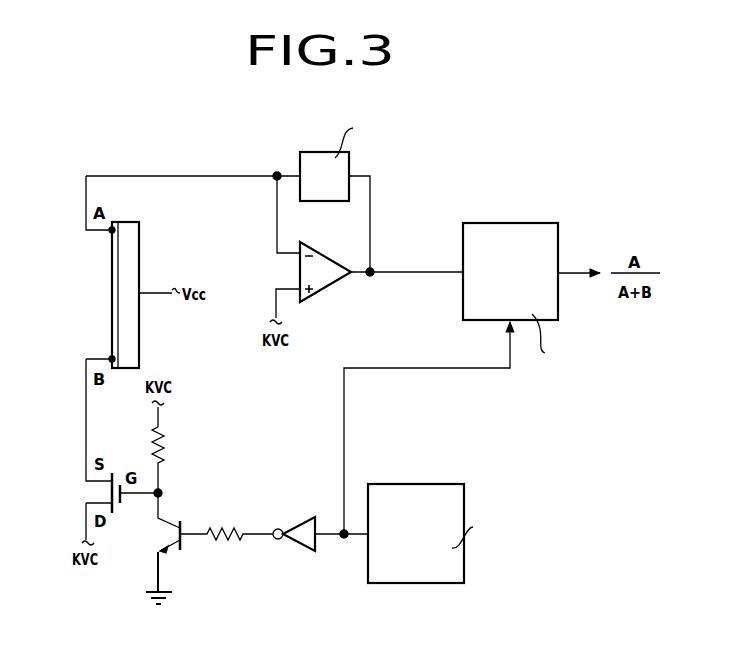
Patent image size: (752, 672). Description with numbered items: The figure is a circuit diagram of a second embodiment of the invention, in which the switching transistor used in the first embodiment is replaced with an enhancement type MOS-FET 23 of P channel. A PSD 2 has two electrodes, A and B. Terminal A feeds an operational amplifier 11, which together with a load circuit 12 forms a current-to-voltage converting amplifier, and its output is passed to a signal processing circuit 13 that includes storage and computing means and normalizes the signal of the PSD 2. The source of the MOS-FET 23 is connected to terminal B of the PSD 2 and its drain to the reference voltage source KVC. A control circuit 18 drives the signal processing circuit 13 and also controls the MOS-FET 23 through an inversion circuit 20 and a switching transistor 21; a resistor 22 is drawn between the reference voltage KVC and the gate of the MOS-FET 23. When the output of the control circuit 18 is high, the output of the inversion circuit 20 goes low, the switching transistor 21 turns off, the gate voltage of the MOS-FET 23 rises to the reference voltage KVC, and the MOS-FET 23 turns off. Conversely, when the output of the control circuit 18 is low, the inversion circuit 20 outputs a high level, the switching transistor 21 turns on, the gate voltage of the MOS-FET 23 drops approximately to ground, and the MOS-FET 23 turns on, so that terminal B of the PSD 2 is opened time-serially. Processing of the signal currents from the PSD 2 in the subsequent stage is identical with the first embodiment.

The PSD 2 is at (121, 303).
The operational amplifier 11 is at (333, 286).
The load circuit 12 is at (318, 150).
The signal processing circuit 13 is at (518, 223).
The control circuit 18 is at (420, 483).
The inversion circuit 20 is at (300, 517).
The switching transistor 21 is at (170, 537).
The resistor 22 is at (163, 445).
The enhancement type MOS-FET of P channel 23 is at (105, 494).